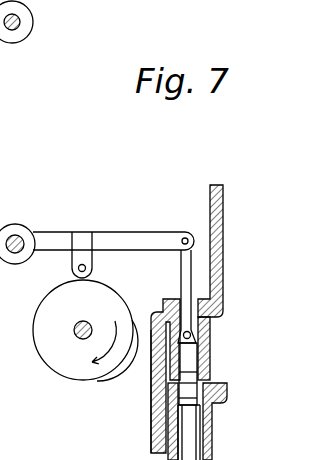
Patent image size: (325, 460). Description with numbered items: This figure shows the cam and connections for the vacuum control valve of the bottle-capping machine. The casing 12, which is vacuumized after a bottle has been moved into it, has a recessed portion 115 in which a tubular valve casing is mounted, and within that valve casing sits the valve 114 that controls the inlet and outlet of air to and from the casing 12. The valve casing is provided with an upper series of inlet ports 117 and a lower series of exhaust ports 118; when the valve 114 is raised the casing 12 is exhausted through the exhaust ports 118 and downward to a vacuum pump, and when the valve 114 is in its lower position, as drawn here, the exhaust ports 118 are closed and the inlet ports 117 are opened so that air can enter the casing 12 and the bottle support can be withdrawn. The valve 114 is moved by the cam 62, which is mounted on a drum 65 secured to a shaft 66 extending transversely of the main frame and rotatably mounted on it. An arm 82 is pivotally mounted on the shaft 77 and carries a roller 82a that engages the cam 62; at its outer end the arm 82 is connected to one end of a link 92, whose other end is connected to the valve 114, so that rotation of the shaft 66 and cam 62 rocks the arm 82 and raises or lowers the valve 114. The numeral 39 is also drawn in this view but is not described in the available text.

The shaft 39 is at (20, 23).
The shaft 77 is at (23, 238).
The arm 82 is at (133, 232).
The roller 82a is at (93, 266).
The drum 65 is at (50, 360).
The shaft 66 is at (76, 324).
The cam 62 is at (108, 378).
The casing 12 is at (224, 270).
The link 92 is at (191, 282).
The inlet ports 117 is at (210, 331).
The valve 114 is at (198, 350).
The exhaust ports 118 is at (213, 370).
The recessed portion 115 is at (144, 380).